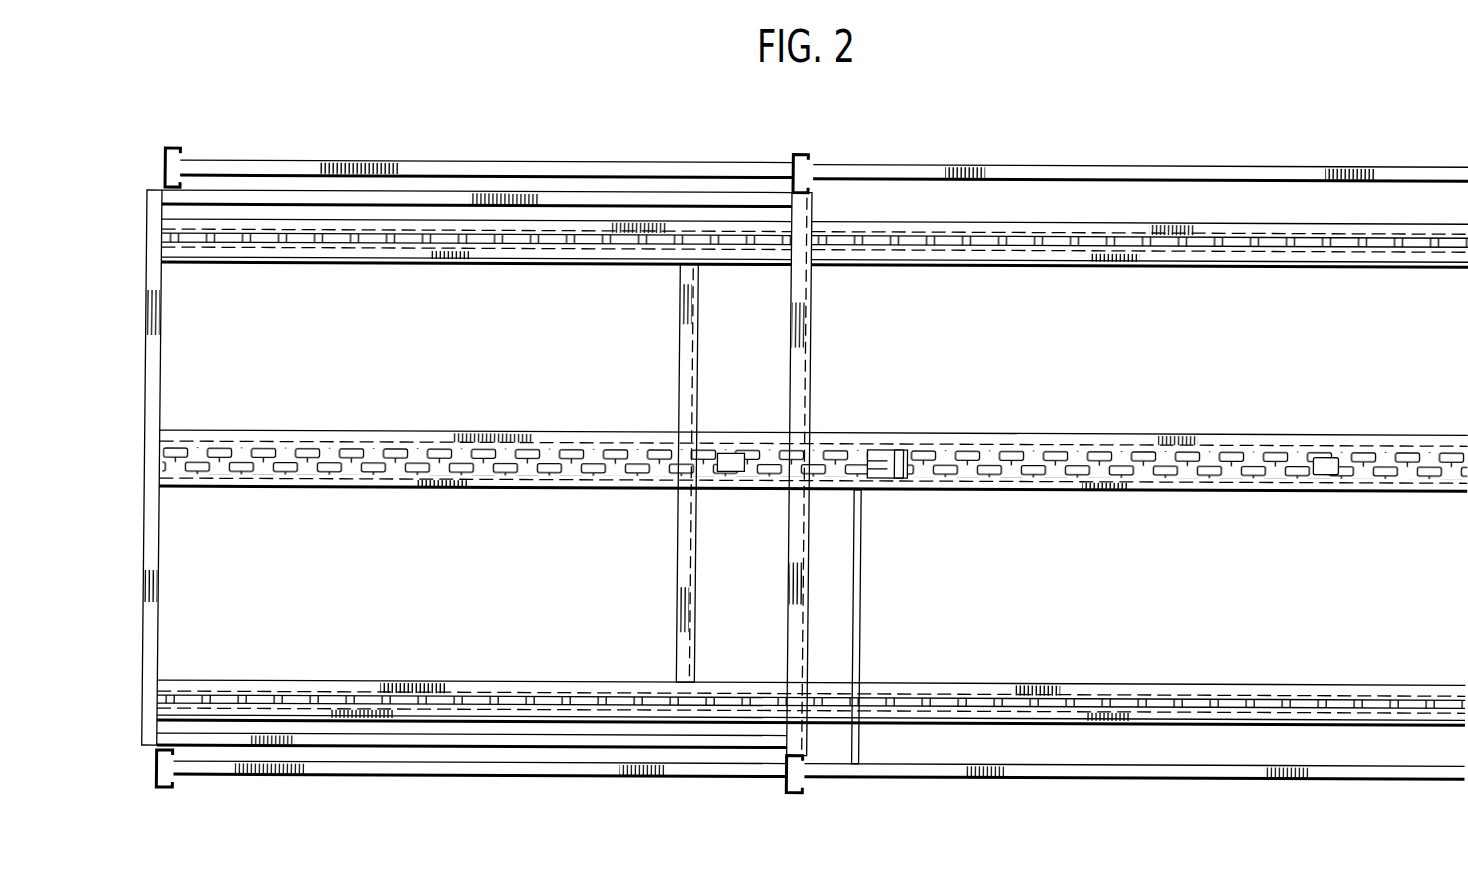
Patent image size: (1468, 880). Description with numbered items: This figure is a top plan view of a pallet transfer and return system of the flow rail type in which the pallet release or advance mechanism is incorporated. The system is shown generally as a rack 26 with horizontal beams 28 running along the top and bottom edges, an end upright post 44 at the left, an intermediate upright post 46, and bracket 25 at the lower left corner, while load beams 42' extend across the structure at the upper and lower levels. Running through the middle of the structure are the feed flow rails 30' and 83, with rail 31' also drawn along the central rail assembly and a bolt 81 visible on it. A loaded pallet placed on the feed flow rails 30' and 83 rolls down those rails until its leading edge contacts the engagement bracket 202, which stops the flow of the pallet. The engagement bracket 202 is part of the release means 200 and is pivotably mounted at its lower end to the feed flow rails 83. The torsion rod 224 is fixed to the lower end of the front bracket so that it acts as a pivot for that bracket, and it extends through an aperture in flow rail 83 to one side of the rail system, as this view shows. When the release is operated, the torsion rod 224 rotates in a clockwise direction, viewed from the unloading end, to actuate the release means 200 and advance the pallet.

The storage rack 26 is at (147, 176).
The horizontal beam 28 is at (1068, 167).
The end upright post 44 is at (158, 371).
The intermediate upright post 46 is at (683, 378).
The load beam 42' is at (812, 472).
The feed flow rail 30' is at (1139, 264).
The rail 31' is at (813, 431).
The feed flow rail 83 is at (1140, 440).
The bolt 81 is at (1328, 470).
The release means 200 is at (878, 430).
The engagement bracket 202 is at (903, 462).
The torsion rod 224 is at (862, 652).
The bracket 25 is at (167, 787).